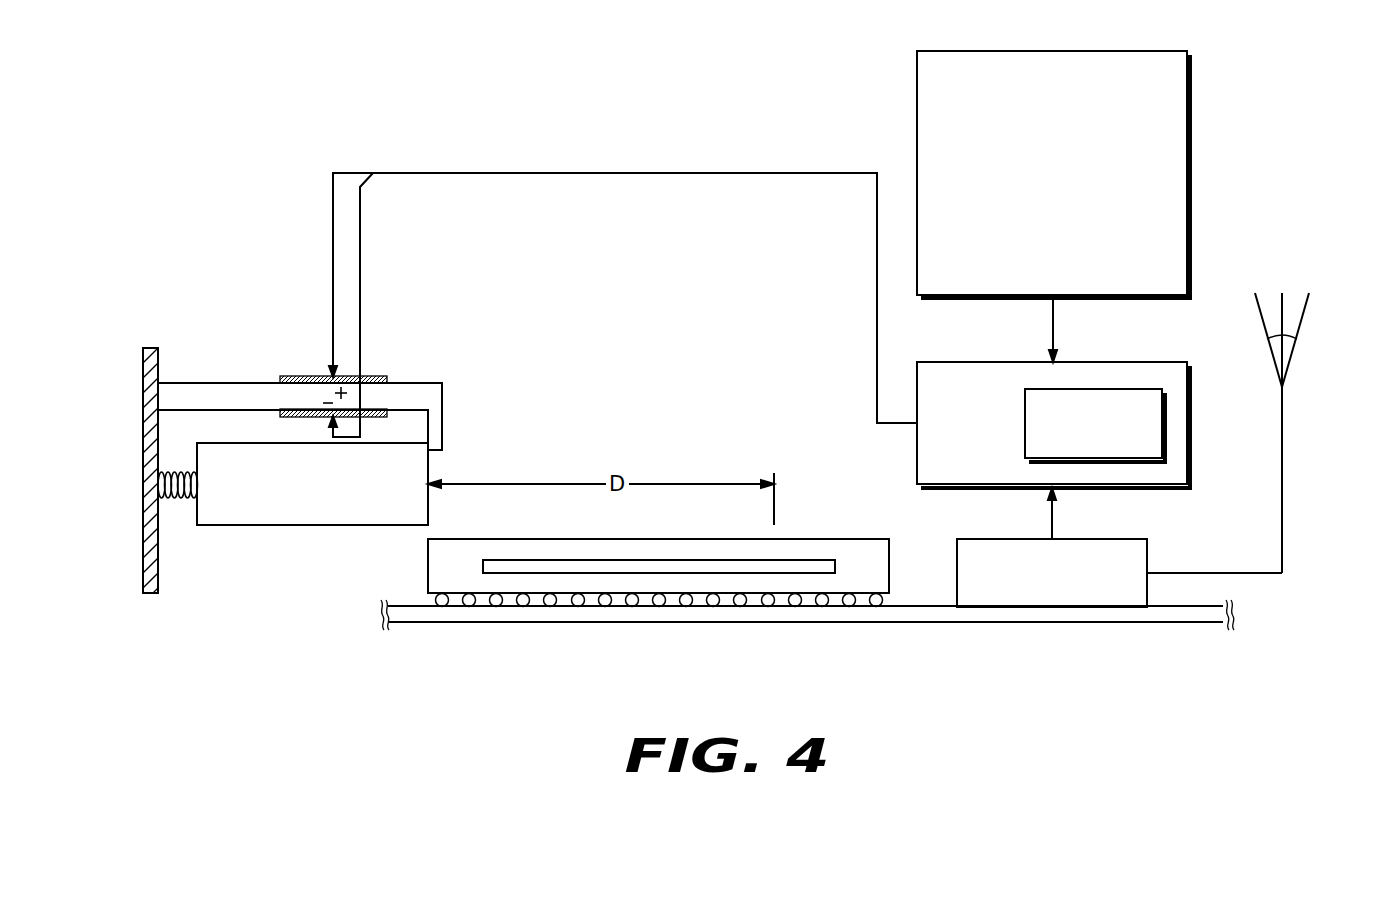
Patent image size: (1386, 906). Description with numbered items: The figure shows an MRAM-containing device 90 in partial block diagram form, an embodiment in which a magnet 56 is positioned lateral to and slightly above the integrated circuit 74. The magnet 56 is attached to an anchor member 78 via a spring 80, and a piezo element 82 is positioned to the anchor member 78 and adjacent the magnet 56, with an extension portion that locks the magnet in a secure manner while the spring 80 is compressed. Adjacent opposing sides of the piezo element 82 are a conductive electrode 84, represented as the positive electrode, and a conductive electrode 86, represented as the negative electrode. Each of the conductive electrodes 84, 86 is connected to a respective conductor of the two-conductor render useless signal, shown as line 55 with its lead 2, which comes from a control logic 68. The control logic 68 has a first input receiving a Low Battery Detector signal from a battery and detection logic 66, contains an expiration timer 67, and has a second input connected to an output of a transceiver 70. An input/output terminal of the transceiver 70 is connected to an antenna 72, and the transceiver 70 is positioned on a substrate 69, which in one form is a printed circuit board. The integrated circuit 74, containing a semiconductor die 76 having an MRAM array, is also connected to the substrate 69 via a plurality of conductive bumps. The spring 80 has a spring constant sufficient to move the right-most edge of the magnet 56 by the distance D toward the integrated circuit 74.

The electrical lead 2 is at (880, 293).
The wire 55 is at (643, 173).
The magnet 56 is at (368, 512).
The battery and detection logic 66 is at (1132, 254).
The expiration timer 67 is at (1165, 420).
The control logic 68 is at (997, 472).
The substrate 69 is at (513, 620).
The transceiver 70 is at (1147, 555).
The antenna 72 is at (1290, 367).
The integrated circuit 74 is at (428, 565).
The semiconductor die 76 is at (523, 560).
The anchor member 78 is at (143, 382).
The spring 80 is at (180, 500).
The piezo element 82 is at (208, 388).
The conductive electrode 84 is at (375, 377).
The conductive electrode 86 is at (280, 415).
The MRAM-containing device 90 is at (537, 703).